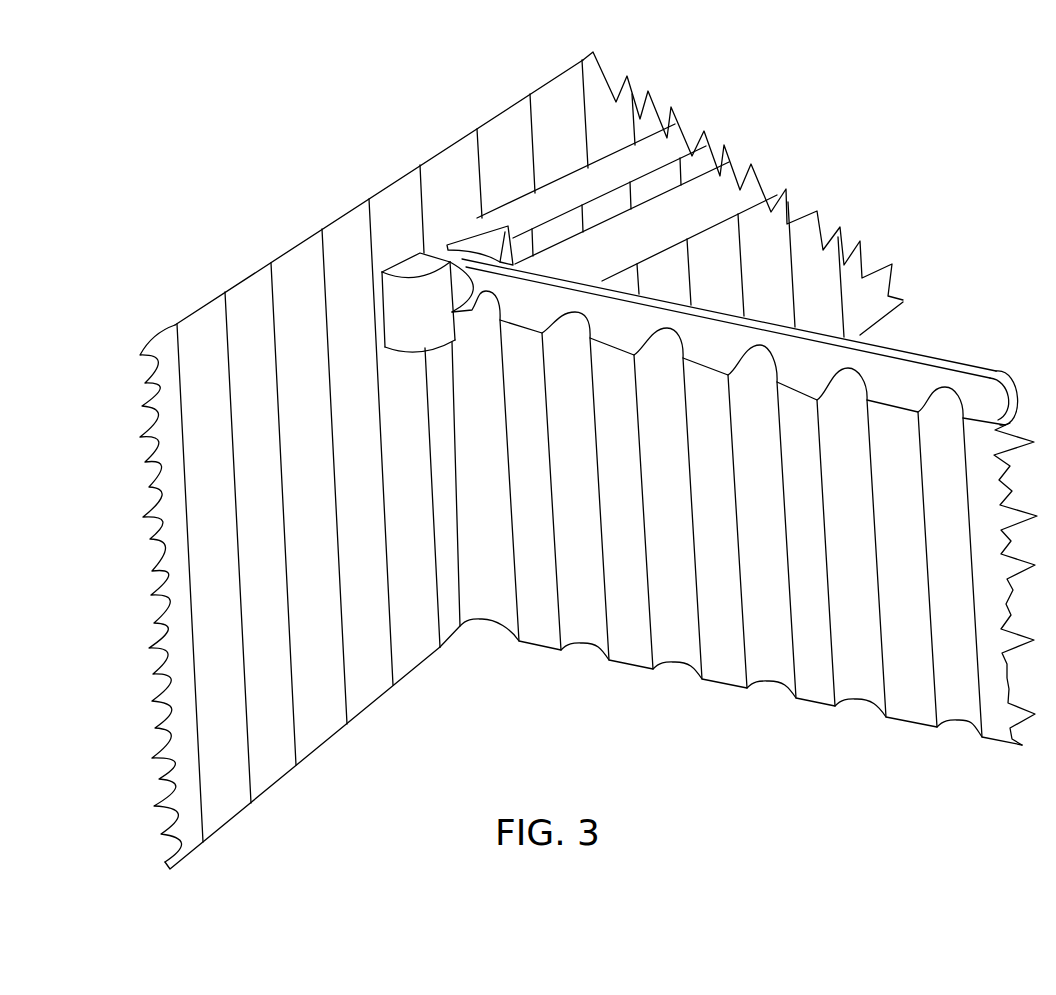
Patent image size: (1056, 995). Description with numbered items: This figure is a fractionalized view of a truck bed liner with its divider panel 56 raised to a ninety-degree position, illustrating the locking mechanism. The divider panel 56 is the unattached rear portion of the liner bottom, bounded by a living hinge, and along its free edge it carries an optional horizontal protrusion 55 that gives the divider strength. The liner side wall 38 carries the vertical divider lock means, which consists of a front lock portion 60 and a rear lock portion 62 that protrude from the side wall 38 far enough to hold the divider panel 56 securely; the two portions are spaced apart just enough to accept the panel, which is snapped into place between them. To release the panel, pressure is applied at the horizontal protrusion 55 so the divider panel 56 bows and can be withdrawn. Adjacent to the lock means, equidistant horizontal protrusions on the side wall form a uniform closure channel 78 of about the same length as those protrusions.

The liner side wall 38 is at (208, 327).
The divider panel 56 is at (528, 455).
The horizontal protrusion 55 is at (522, 217).
The front lock portion 60 is at (482, 233).
The rear lock portion 62 is at (402, 268).
The closure channel 78 is at (718, 146).